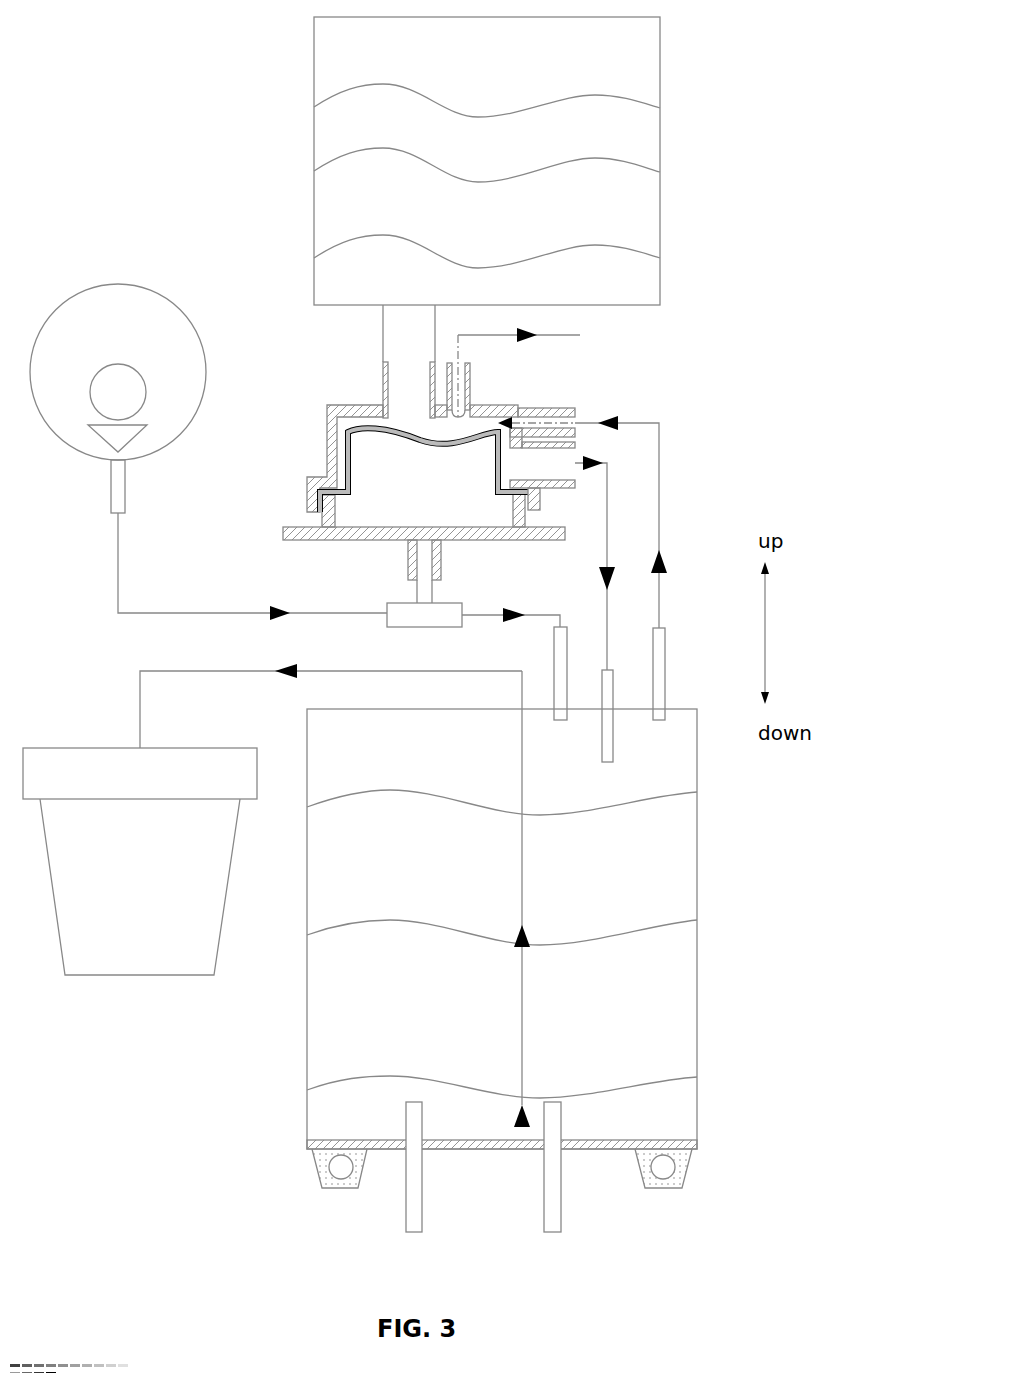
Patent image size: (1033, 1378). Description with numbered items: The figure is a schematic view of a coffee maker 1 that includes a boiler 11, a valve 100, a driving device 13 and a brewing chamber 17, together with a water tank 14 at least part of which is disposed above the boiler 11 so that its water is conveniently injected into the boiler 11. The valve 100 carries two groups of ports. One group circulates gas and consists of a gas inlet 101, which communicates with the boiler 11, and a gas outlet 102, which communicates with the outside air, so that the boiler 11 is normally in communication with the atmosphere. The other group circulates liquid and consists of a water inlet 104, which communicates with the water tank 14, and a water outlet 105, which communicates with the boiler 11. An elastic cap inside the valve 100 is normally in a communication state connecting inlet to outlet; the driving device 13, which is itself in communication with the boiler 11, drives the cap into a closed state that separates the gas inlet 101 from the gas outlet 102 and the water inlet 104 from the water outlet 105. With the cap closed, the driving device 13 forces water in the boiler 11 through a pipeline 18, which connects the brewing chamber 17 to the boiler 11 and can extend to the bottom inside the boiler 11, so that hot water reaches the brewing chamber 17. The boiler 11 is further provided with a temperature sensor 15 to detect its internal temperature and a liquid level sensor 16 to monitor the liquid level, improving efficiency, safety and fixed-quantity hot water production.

The coffee maker 1 is at (692, 93).
The water tank 14 is at (590, 190).
The driving device 13 is at (142, 327).
The valve 100 is at (452, 478).
The gas inlet 101 is at (573, 415).
The gas outlet 102 is at (467, 380).
The water inlet 104 is at (402, 393).
The water outlet 105 is at (562, 468).
The brewing chamber 17 is at (170, 898).
The boiler 11 is at (645, 1000).
The pipeline 18 is at (522, 898).
The temperature sensor 15 is at (412, 1190).
The liquid level sensor 16 is at (552, 1190).